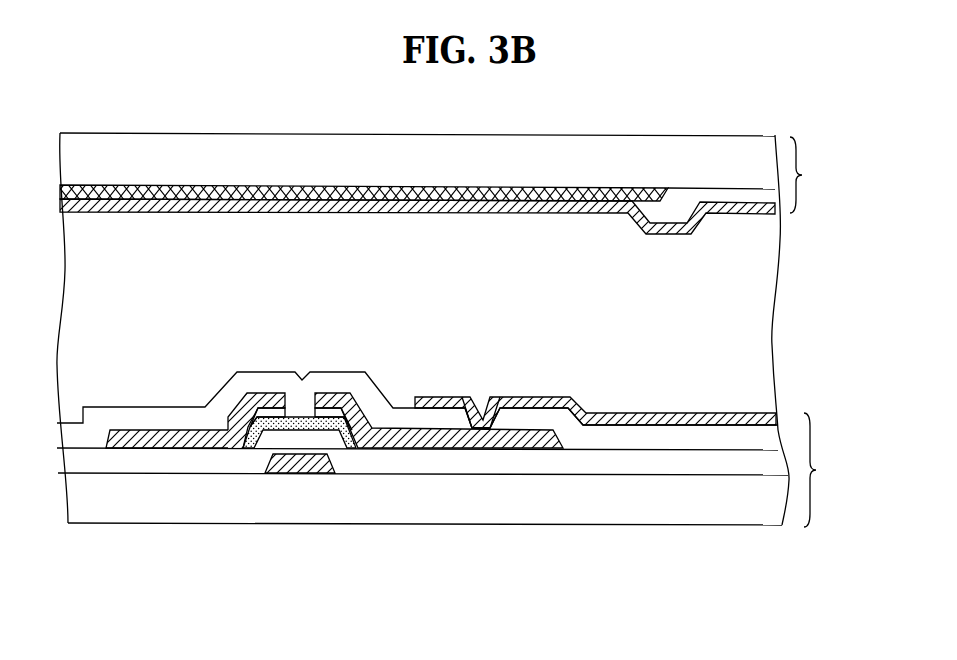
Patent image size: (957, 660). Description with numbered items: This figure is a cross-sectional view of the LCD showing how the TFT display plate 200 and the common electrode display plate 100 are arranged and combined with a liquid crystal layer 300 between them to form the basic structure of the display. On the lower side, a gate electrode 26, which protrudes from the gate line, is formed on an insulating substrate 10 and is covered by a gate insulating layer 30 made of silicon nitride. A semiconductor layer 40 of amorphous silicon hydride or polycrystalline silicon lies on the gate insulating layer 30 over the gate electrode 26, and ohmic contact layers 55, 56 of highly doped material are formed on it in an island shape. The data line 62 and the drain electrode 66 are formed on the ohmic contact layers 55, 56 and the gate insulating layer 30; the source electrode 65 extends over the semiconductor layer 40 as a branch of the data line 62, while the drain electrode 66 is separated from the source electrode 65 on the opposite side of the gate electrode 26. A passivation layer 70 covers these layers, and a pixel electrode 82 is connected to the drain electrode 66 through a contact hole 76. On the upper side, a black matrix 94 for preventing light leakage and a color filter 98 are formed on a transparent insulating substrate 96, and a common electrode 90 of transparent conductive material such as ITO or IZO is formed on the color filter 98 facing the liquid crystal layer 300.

The insulating substrate 10 is at (469, 510).
The gate electrode 26 is at (300, 473).
The gate insulating layer 30 is at (545, 457).
The semiconductor layer 40 is at (304, 414).
The ohmic contact layer 55 is at (268, 403).
The ohmic contact layer 56 is at (328, 403).
The data line 62 is at (121, 449).
The source electrode 65 is at (233, 448).
The drain electrode 66 is at (382, 448).
The passivation layer 70 is at (121, 422).
The contact hole 76 is at (489, 391).
The pixel electrode 82 is at (619, 414).
The common electrode 90 is at (548, 213).
The black matrix 94 is at (326, 186).
The insulating substrate 96 is at (240, 131).
The color filter 98 is at (683, 194).
The common electrode display plate 100 is at (831, 470).
The TFT display plate 200 is at (819, 175).
The liquid crystal layer 300 is at (781, 346).